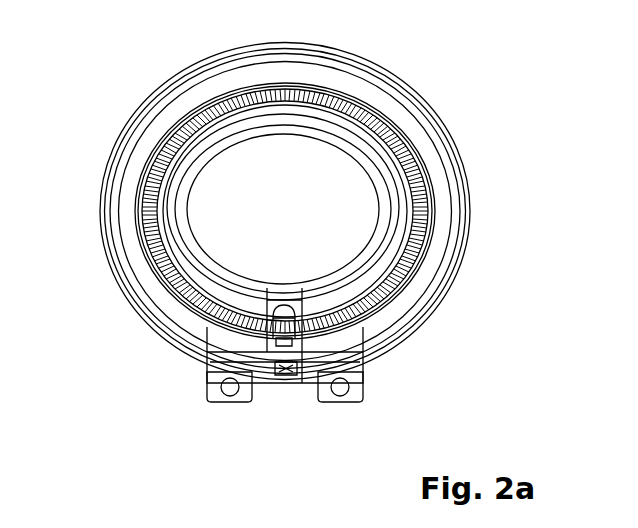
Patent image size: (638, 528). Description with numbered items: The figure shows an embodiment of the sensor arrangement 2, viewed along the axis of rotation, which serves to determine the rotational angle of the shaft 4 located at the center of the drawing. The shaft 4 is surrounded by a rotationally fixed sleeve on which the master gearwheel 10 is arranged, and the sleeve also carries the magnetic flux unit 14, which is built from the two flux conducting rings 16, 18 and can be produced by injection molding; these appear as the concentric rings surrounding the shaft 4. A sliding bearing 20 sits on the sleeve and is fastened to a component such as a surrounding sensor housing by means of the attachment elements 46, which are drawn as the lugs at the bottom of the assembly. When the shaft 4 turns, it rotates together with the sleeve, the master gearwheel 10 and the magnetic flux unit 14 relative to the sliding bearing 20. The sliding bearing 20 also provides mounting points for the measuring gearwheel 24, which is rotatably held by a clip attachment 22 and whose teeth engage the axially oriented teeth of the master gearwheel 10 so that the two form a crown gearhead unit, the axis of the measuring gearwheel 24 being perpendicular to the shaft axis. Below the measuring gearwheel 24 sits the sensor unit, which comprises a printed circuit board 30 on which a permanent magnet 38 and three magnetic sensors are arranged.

The sensor arrangement 2 is at (338, 415).
The shaft 4 is at (223, 152).
The master gearwheel 10 is at (360, 100).
The magnetic flux unit 14 is at (437, 155).
The flux conducting ring 16 is at (168, 130).
The flux conducting ring 18 is at (427, 108).
The sliding bearing 20 is at (217, 137).
The clip attachment 22 is at (297, 307).
The measuring gearwheel 24 is at (268, 303).
The printed circuit board 30 is at (302, 385).
The permanent magnet 38 is at (272, 382).
The attachment elements 46 is at (206, 392).